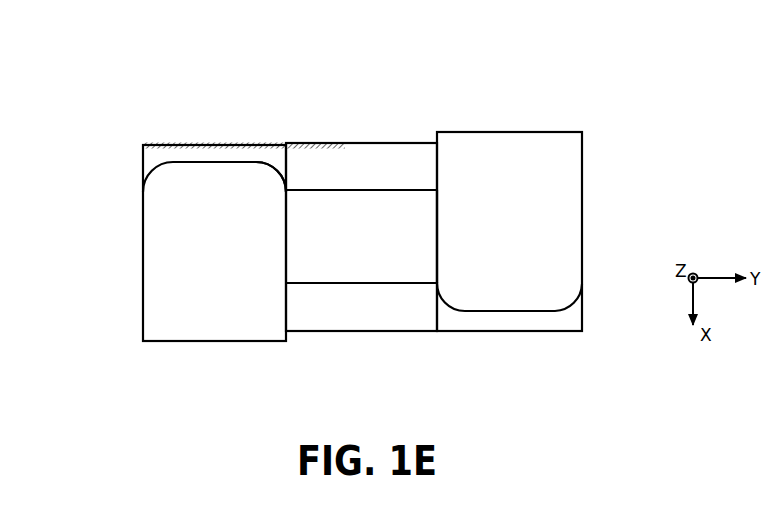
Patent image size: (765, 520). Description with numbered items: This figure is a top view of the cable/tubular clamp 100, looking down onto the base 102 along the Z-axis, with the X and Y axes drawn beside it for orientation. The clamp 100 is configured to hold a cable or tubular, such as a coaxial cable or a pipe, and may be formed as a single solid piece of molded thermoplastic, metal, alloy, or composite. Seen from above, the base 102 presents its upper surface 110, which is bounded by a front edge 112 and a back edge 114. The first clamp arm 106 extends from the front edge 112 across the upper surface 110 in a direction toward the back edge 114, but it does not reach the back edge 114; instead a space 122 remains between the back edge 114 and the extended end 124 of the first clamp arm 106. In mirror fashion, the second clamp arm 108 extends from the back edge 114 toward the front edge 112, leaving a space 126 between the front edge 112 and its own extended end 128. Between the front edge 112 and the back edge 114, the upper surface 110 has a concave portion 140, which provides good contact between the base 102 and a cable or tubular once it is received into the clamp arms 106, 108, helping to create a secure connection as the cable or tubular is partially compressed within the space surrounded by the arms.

The cable/tubular clamp 100 is at (199, 67).
The base 102 is at (308, 131).
The first clamp arm 106 is at (198, 248).
The second clamp arm 108 is at (518, 234).
The upper surface 110 is at (372, 226).
The front edge 112 is at (328, 331).
The back edge 114 is at (372, 140).
The space 122 is at (188, 147).
The extended end of the first clamp arm 124 is at (236, 150).
The space 126 is at (540, 318).
The extended end of the second clamp arm 128 is at (493, 310).
The concave portion 140 is at (405, 230).